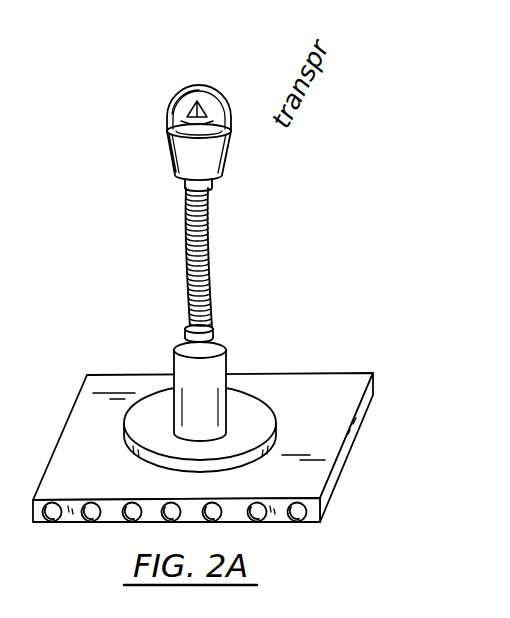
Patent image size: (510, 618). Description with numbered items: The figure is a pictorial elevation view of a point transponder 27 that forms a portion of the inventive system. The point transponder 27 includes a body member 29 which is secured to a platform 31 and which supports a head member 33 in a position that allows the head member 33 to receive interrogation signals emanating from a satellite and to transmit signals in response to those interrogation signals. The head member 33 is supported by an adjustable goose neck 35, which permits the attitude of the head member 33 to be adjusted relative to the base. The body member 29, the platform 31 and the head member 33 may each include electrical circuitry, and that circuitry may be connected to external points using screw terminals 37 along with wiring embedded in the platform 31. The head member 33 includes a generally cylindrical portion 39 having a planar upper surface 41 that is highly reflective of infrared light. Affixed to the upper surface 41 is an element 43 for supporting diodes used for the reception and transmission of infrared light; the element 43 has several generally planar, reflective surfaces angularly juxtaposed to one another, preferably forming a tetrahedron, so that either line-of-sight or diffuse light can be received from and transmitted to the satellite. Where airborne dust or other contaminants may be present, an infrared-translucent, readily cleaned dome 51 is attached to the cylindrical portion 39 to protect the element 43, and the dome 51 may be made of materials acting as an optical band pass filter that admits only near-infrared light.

The point transponder 27 is at (136, 349).
The body member 29 is at (236, 356).
The platform 31 is at (327, 372).
The head member 33 is at (232, 147).
The adjustable goose neck 35 is at (212, 257).
The screw terminals 37 is at (45, 523).
The generally cylindrical portion 39 is at (178, 150).
The planar upper surface 41 is at (228, 112).
The element 43 is at (210, 100).
The dome 51 is at (183, 86).